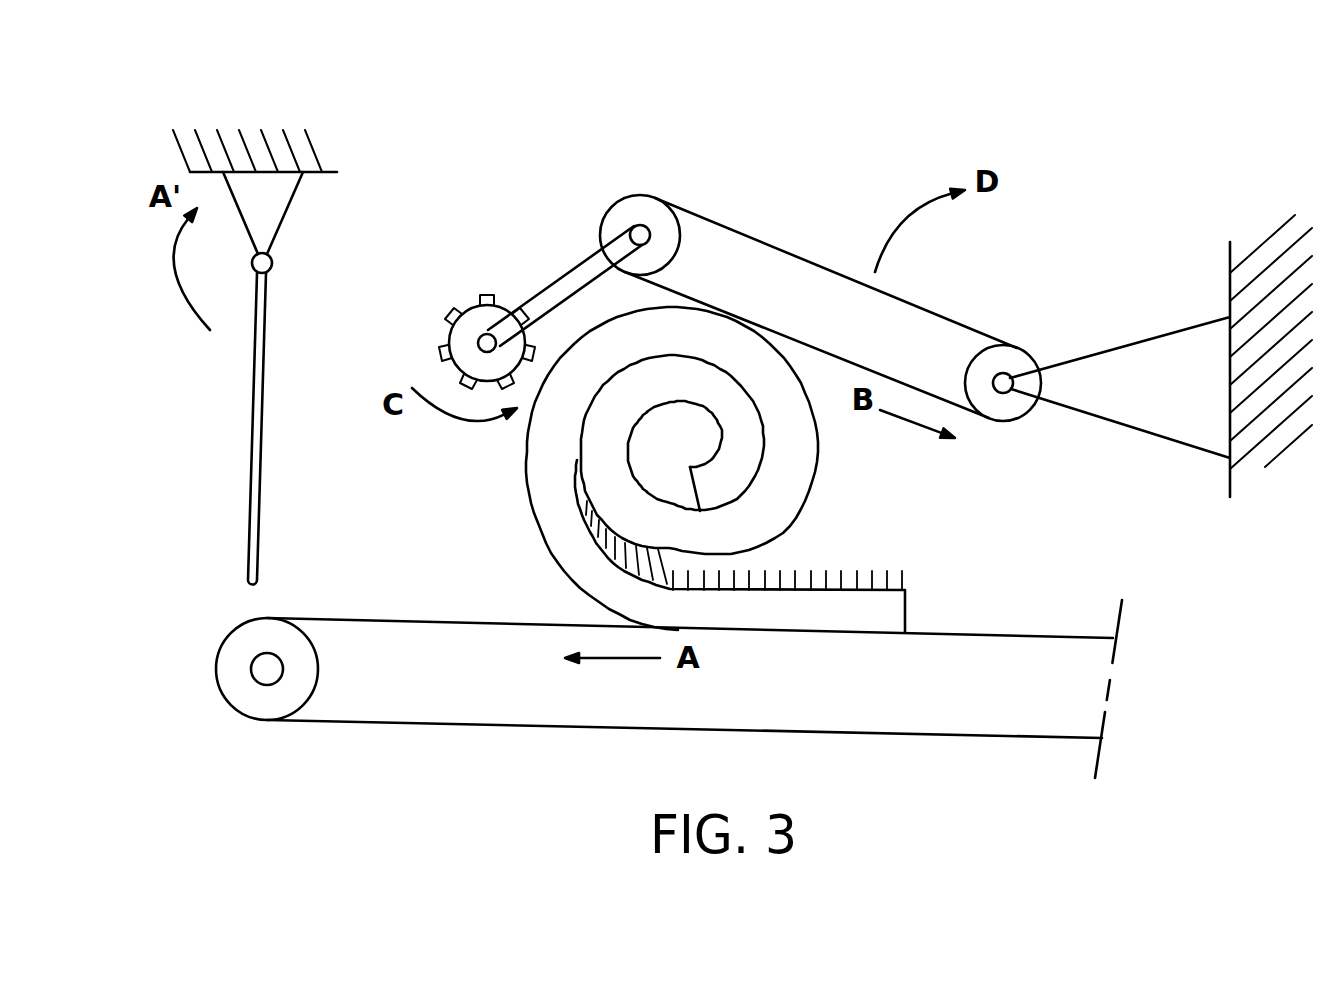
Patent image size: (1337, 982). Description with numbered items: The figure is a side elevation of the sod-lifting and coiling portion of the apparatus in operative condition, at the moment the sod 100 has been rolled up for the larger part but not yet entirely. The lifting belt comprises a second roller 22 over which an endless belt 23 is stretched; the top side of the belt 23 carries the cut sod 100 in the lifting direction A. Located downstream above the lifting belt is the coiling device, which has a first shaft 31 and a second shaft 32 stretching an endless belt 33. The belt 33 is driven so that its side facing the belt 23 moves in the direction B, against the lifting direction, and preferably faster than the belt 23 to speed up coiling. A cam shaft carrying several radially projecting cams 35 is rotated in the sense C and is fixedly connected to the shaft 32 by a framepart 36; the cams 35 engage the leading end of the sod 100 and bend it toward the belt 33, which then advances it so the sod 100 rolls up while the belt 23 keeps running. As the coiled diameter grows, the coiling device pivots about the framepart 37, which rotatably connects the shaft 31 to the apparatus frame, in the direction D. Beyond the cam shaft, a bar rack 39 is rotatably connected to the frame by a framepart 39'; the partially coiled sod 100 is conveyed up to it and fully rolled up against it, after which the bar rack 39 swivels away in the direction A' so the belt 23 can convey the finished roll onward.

The second roller 22 is at (240, 647).
The endless belt 23 is at (1018, 633).
The first shaft 31 is at (1005, 355).
The second shaft 32 is at (632, 208).
The endless belt 33 is at (806, 255).
The cams 35 is at (418, 328).
The framepart 36 is at (555, 292).
The framepart 37 is at (1185, 365).
The bar rack 39 is at (206, 429).
The framepart 39' is at (290, 201).
The sod 100 is at (897, 608).